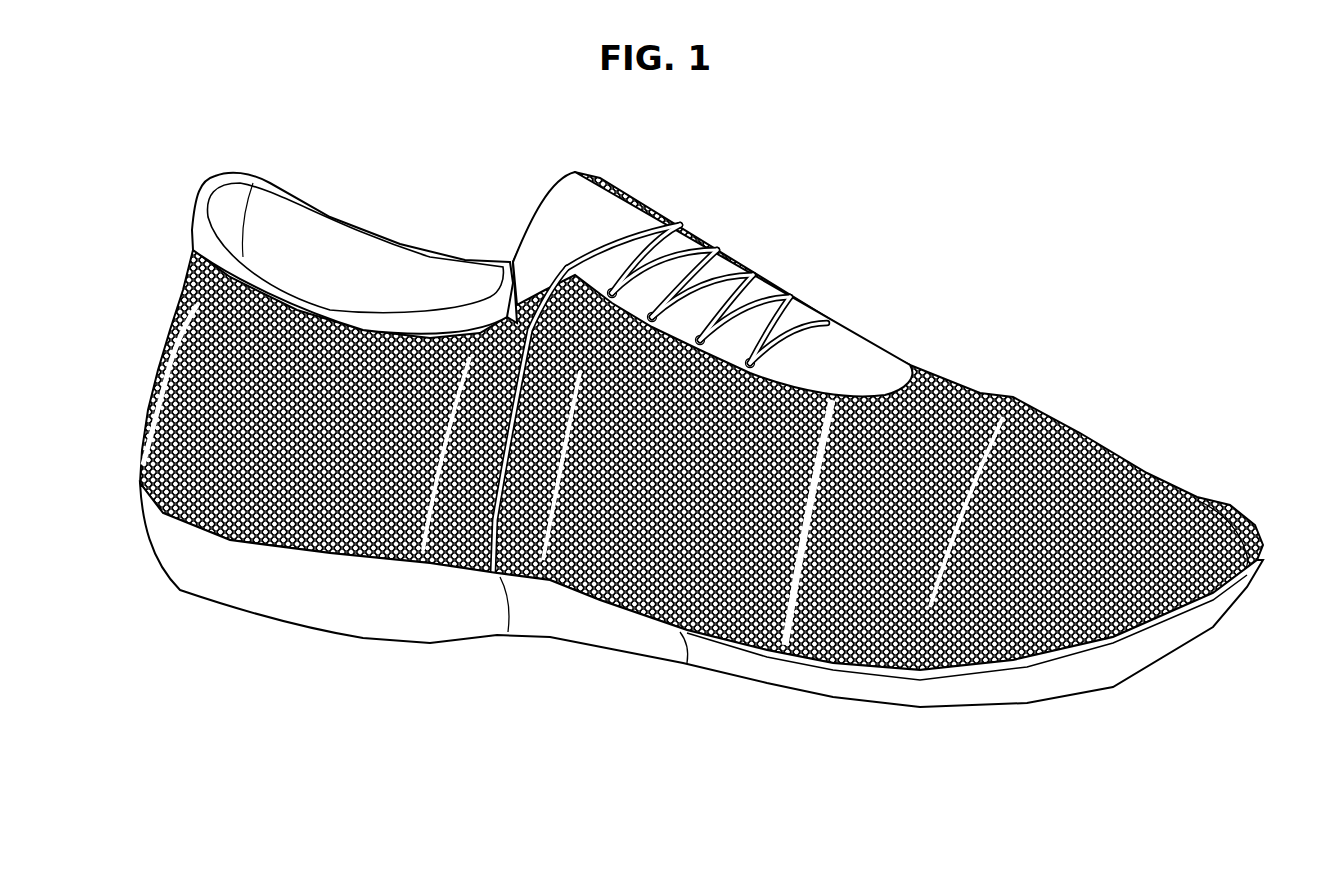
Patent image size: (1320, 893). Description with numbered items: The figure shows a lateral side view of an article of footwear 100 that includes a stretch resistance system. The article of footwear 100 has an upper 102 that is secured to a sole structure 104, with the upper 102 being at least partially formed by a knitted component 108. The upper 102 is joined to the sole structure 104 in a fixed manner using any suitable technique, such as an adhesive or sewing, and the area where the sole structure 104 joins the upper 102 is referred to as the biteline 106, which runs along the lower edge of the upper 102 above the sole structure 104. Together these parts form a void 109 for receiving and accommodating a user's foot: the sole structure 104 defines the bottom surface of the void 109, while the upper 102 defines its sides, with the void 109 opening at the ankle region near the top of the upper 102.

The article of footwear 100 is at (903, 218).
The upper 102 is at (1090, 445).
The sole structure 104 is at (1090, 690).
The biteline 106 is at (1025, 667).
The knitted component 108 is at (970, 390).
The void 109 is at (448, 284).